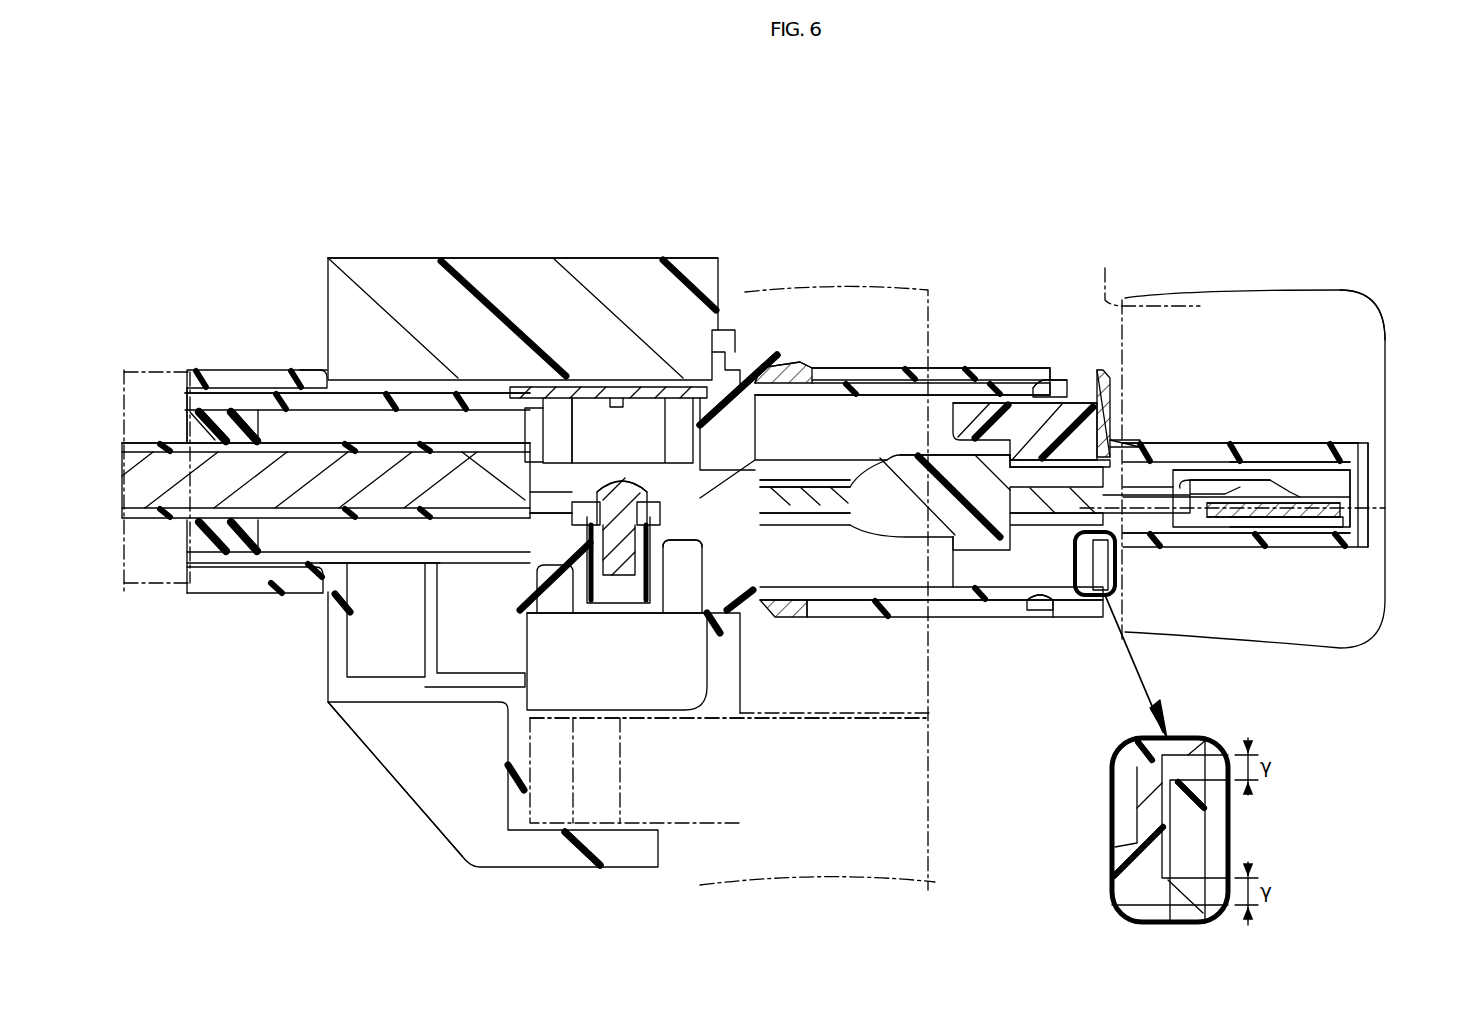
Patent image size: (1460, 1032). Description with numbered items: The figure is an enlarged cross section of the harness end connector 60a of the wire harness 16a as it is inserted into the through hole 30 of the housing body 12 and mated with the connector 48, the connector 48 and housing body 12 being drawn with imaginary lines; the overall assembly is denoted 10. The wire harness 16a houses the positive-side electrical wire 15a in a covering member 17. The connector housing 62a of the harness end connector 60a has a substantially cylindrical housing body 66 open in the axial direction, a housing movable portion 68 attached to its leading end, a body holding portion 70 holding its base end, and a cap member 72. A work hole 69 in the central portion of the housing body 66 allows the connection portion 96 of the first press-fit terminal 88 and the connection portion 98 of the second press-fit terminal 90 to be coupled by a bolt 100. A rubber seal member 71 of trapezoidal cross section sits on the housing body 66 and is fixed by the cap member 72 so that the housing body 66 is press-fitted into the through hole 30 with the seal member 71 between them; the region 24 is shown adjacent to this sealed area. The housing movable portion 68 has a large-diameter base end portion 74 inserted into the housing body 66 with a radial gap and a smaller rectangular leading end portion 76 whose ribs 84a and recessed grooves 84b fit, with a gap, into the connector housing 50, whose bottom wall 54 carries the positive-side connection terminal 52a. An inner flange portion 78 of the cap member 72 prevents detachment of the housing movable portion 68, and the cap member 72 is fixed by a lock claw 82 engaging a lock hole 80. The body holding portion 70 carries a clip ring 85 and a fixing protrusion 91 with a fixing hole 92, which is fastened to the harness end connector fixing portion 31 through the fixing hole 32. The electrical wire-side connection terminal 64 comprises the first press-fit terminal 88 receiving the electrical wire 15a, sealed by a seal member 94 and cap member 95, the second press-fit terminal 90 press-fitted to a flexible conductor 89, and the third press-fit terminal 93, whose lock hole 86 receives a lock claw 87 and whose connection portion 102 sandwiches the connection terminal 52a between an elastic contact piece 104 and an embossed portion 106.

The connector device 10 is at (951, 126).
The housing body 12 is at (788, 270).
The positive-side electrical wire 15a is at (146, 545).
The wire harness 16a is at (279, 238).
The covering member 17 is at (160, 400).
The outer tube 24 is at (890, 335).
The through hole 30 is at (1017, 375).
The harness end connector fixing portion 31 is at (687, 803).
The fixing hole 32 is at (617, 742).
The connector 48 is at (1291, 260).
The connector housing 50 is at (1340, 318).
The positive-side connection terminal 52a is at (1370, 500).
The bottom wall 54 is at (1370, 473).
The harness end connector 60a is at (537, 146).
The connector housing 62a is at (883, 160).
The electrical wire-side connection terminal 64 is at (885, 793).
The housing body 66 is at (736, 395).
The housing movable portion 68 is at (1040, 430).
The work hole 69 is at (553, 520).
The body holding portion 70 is at (567, 310).
The seal member 71 is at (776, 365).
The cap member 72 is at (1030, 403).
The base end portion 74 is at (1040, 398).
The leading end portion 76 is at (1183, 445).
The inner flange portion 78 is at (1100, 428).
The lock hole 80 is at (1047, 390).
The lock claw 82 is at (1050, 378).
The rib 84a is at (1293, 447).
The recessed groove 84b is at (1307, 458).
The clip ring 85 is at (303, 370).
The lock hole 86 is at (1180, 515).
The lock claw 87 is at (1223, 518).
The first press-fit terminal 88 is at (450, 517).
The flexible conductor 89 is at (907, 510).
The second press-fit terminal 90 is at (777, 520).
The fixing protrusion 91 is at (480, 818).
The fixing hole 92 is at (582, 850).
The third press-fit terminal 93 is at (1023, 520).
The seal member 94 is at (235, 425).
The cap member 95 is at (200, 420).
The connection portion 96 is at (572, 508).
The connection portion 98 is at (672, 517).
The bolt 100 is at (617, 497).
The connection portion 102 is at (1245, 470).
The elastic contact piece 104 is at (1270, 480).
The embossed portion 106 is at (1293, 515).